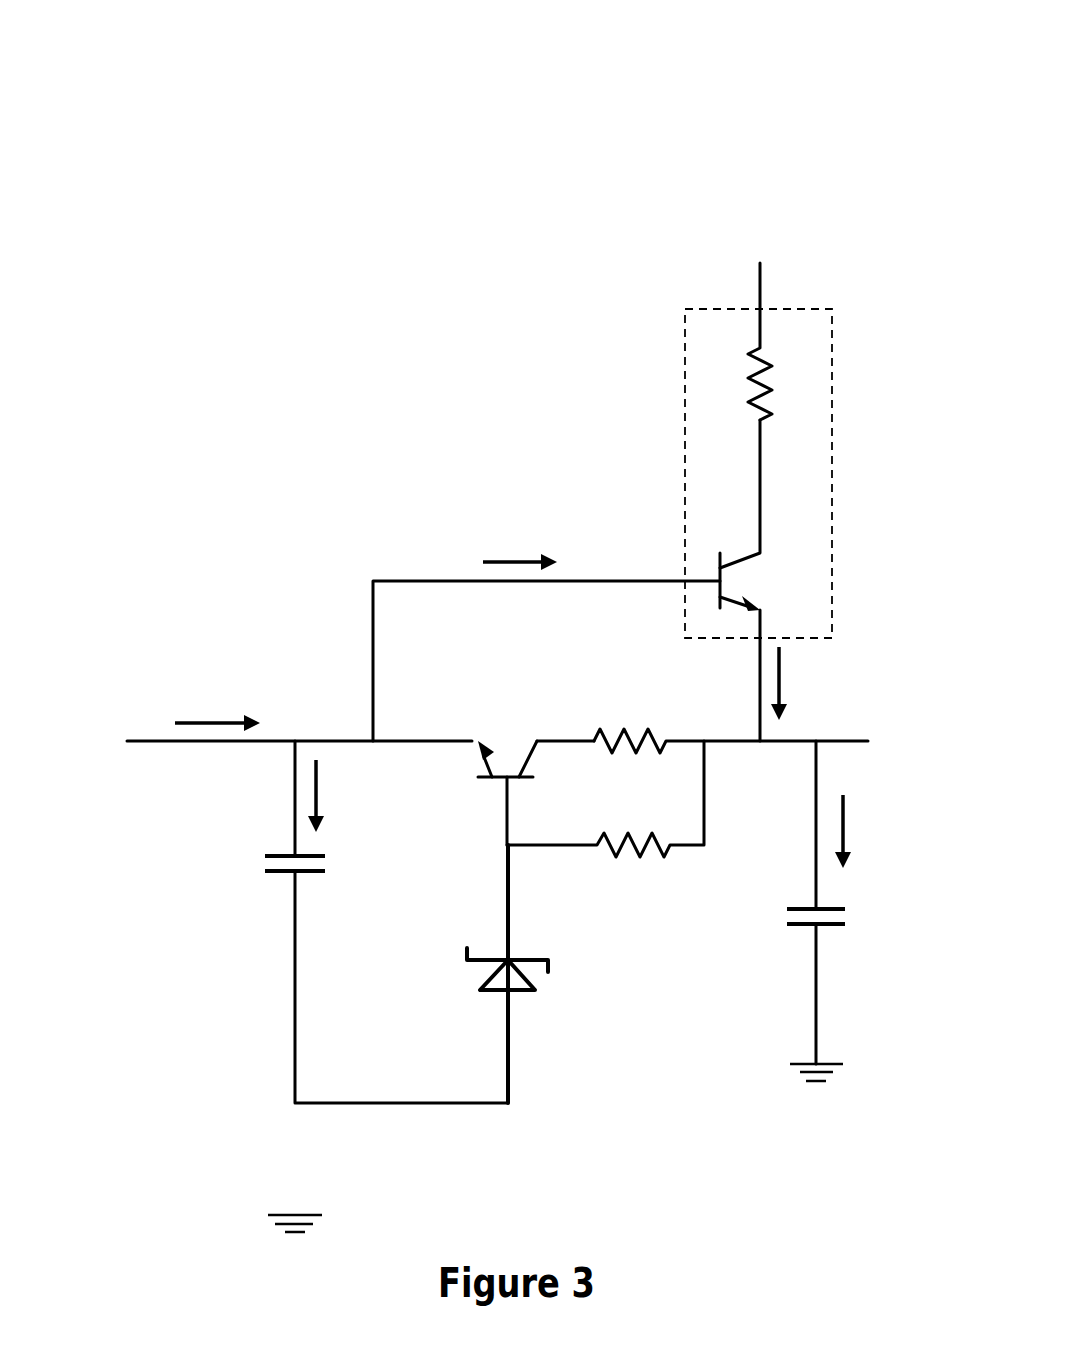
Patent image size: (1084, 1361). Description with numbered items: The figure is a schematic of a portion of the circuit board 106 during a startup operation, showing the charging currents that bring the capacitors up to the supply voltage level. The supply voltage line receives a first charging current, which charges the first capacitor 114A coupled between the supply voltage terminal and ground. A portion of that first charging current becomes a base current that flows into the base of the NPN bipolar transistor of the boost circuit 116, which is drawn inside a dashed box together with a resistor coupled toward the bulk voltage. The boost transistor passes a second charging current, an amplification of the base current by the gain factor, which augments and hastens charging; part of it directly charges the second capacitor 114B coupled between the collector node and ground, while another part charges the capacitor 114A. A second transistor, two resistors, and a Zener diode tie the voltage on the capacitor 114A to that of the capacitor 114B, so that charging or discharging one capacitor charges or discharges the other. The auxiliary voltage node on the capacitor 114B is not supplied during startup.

The circuit board 106 is at (616, 82).
The boost circuit 116 is at (684, 361).
The capacitor 114A is at (270, 873).
The capacitor 114B is at (788, 927).